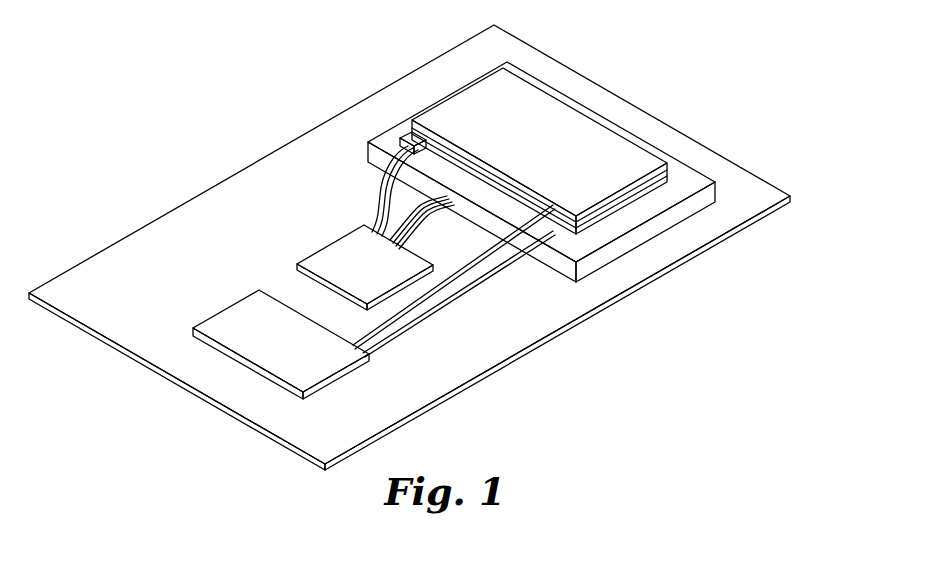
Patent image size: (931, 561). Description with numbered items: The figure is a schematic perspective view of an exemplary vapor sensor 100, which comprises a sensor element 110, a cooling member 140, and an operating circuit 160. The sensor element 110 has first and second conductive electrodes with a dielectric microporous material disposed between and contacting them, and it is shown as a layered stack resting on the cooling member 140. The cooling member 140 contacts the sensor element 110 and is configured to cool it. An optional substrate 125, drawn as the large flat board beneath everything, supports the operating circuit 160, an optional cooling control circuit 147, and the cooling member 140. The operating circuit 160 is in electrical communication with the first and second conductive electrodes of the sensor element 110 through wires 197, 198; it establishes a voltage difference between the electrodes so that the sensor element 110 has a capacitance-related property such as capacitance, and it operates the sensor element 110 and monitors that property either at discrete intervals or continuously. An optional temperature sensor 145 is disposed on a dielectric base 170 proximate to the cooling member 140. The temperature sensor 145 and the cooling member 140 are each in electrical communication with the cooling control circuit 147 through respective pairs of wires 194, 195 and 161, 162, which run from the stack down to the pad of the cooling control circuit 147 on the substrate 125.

The vapor sensor 100 is at (409, 244).
The sensor element 110 is at (606, 117).
The substrate 125 is at (748, 187).
The cooling member 140 is at (695, 221).
The temperature sensor 145 is at (404, 140).
The cooling control circuit 147 is at (344, 270).
The operating circuit 160 is at (263, 354).
The wire 161 is at (438, 207).
The wire 162 is at (472, 215).
The dielectric base 170 is at (622, 237).
The wire 194 is at (378, 186).
The wire 195 is at (380, 213).
The wire 197 is at (385, 341).
The wire 198 is at (424, 300).